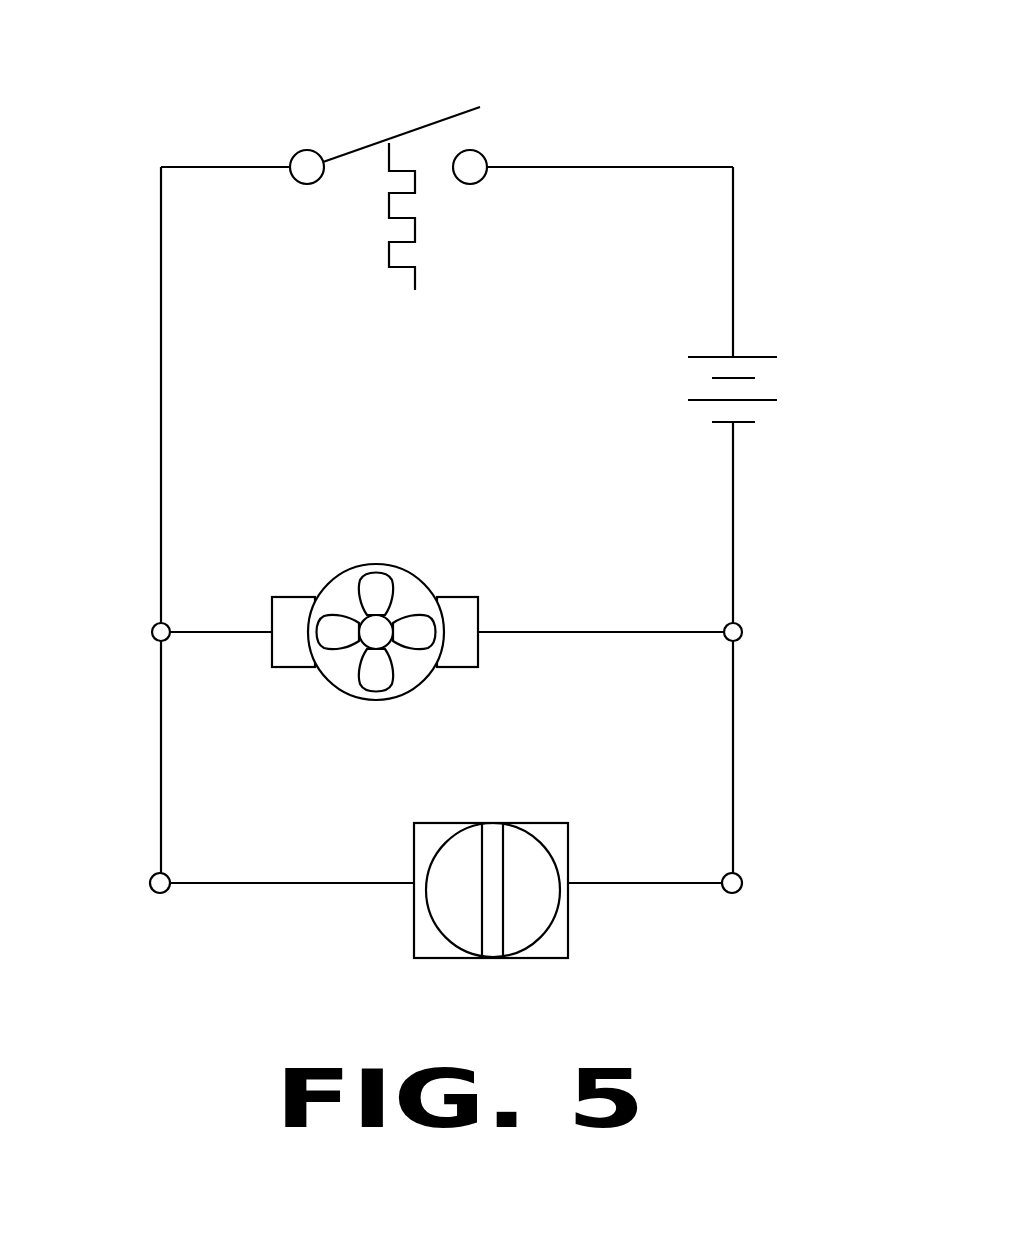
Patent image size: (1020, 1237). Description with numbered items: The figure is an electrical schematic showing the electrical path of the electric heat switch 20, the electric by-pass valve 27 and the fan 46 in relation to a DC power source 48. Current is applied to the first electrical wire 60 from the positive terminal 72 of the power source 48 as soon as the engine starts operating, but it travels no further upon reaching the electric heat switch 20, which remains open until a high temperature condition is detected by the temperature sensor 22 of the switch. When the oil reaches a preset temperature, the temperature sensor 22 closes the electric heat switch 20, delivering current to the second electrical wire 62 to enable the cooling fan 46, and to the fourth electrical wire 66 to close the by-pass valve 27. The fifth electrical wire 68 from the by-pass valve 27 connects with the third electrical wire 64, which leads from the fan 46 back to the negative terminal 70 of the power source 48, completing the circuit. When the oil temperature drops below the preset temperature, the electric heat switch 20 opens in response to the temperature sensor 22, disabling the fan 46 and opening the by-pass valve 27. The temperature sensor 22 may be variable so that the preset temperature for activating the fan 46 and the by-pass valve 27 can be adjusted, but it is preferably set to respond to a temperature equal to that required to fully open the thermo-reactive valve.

The electric heat switch 20 is at (307, 150).
The temperature sensor 22 is at (417, 230).
The first electrical wire 60 is at (733, 258).
The positive terminal 72 is at (757, 357).
The power source 48 is at (703, 394).
The negative terminal 70 is at (743, 422).
The fan 46 is at (377, 564).
The second electrical wire 62 is at (192, 632).
The third electrical wire 64 is at (690, 632).
The electric by-pass valve 27 is at (538, 824).
The fourth electrical wire 66 is at (255, 887).
The fifth electrical wire 68 is at (628, 887).